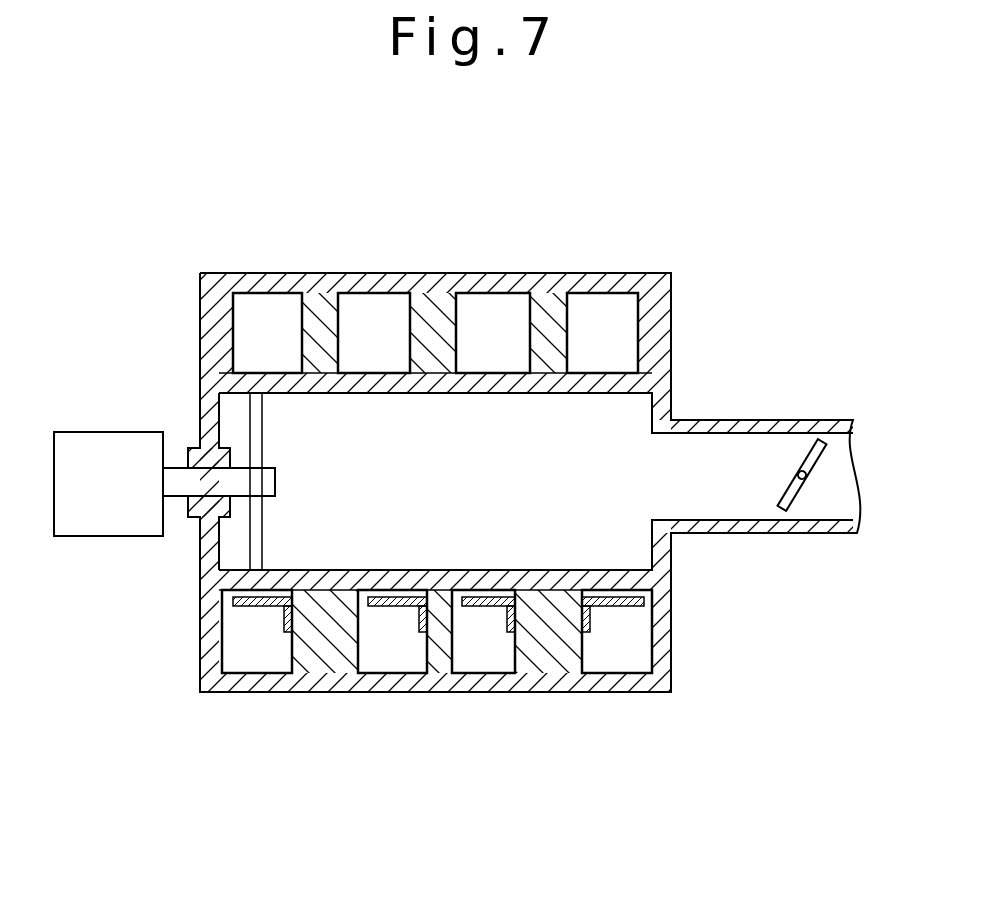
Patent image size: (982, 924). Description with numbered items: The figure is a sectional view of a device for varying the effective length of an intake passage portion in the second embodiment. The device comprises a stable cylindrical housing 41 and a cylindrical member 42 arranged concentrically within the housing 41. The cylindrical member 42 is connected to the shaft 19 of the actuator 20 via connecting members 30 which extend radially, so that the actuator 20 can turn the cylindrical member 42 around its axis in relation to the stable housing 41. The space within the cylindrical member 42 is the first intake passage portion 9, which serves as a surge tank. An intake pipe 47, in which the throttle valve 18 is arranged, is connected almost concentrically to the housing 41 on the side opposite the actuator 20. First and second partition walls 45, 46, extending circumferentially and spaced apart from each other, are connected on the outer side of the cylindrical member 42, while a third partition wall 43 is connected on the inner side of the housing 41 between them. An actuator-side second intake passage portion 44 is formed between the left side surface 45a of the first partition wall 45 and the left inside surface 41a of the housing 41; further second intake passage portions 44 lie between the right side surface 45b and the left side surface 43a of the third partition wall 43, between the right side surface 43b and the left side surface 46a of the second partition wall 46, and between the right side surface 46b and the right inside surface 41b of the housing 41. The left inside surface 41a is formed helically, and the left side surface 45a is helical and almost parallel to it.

The first intake passage portion 9 is at (607, 528).
The throttle valve 18 is at (817, 455).
The shaft 19 is at (181, 485).
The actuator 20 is at (90, 517).
The connecting members 30 is at (262, 437).
The stable cylindrical housing 41 is at (642, 276).
The left inside surface of the housing 41a is at (241, 312).
The right inside surface of the housing 41b is at (628, 322).
The cylindrical member 42 is at (493, 385).
The third partition wall 43 is at (433, 300).
The left side surface of the third partition wall 43a is at (402, 322).
The right side surface of the third partition wall 43b is at (467, 312).
The second intake passage portion 44 is at (251, 362).
The first partition wall 45 is at (322, 296).
The left side surface of the first partition wall 45a is at (296, 313).
The right side surface of the first partition wall 45b is at (350, 312).
The second partition wall 46 is at (549, 296).
The left side surface of the second partition wall 46a is at (522, 318).
The right side surface of the second partition wall 46b is at (574, 312).
The intake pipe 47 is at (806, 420).